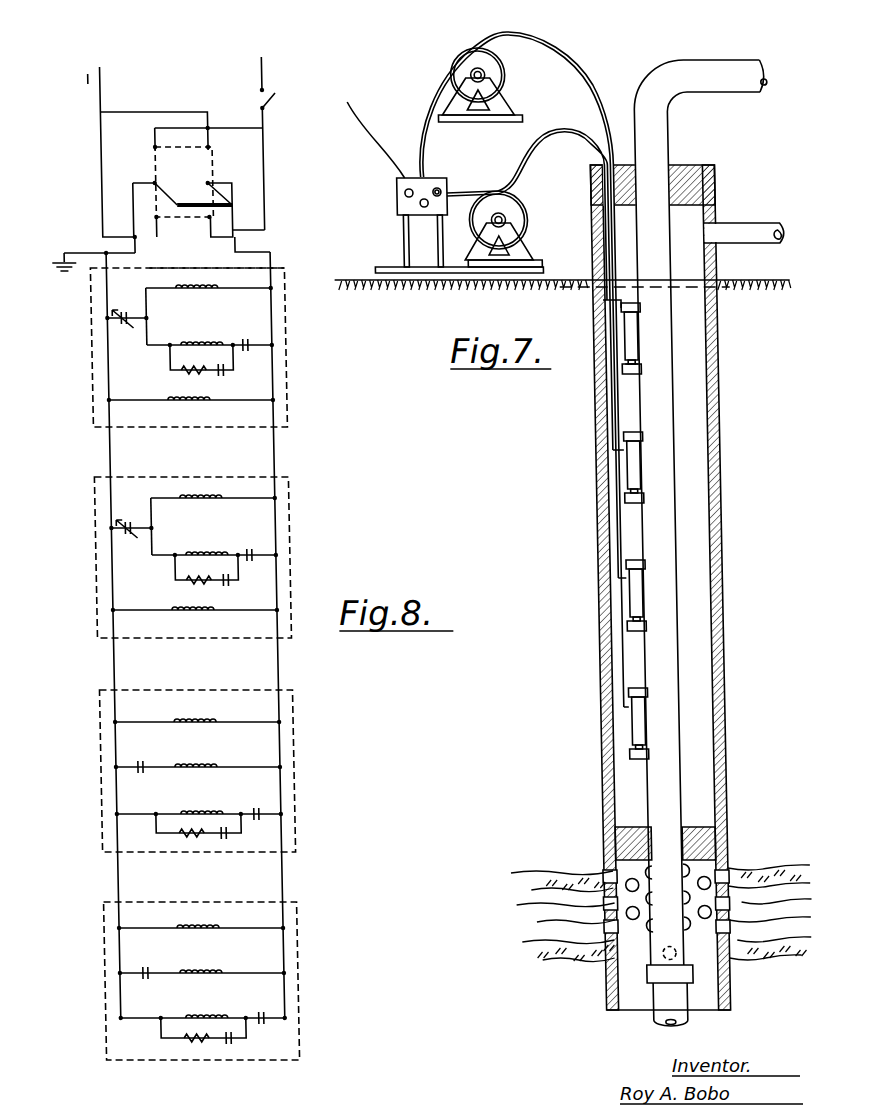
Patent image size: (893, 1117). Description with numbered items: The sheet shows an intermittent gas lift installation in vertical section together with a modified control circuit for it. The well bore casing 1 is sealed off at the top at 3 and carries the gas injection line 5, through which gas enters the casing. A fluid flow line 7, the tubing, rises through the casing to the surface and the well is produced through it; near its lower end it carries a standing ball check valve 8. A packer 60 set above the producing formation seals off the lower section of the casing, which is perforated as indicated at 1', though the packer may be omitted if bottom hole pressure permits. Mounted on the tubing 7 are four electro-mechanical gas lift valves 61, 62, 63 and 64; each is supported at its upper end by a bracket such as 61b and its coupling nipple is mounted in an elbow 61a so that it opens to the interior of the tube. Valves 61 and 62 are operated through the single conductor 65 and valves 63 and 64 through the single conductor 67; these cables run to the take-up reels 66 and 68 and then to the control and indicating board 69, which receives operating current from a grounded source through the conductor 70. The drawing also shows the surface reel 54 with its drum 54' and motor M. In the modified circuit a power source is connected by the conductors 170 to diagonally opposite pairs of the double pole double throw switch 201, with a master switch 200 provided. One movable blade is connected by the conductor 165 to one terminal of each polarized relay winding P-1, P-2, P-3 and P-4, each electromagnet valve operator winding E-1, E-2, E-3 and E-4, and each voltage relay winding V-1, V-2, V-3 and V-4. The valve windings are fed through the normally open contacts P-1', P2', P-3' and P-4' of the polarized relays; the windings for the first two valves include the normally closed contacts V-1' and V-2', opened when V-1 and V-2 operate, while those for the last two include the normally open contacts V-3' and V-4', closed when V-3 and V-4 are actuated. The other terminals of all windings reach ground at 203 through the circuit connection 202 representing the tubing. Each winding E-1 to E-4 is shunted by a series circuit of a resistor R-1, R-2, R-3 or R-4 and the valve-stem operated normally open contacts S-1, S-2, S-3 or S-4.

In FIG. 7, the well bore casing 1 is at (678, 587).
In FIG. 7, the casing perforations 1' is at (719, 880).
In FIG. 7, the casing top seal 3 is at (709, 188).
In FIG. 7, the gas injection line 5 is at (759, 244).
In FIG. 7, the fluid flow line 7 is at (661, 488).
In FIG. 7, the standing ball check valve 8 is at (664, 953).
In FIG. 7, the cable reel 54 is at (458, 215).
In FIG. 7, the cable reel drum 54' is at (382, 206).
In FIG. 7, the packer 60 is at (703, 838).
In FIG. 8, the electro-mechanical gas lift valve 61 is at (286, 356).
In FIG. 7, the electro-mechanical gas lift valve 61 is at (624, 348).
In FIG. 7, the elbow 61a is at (631, 375).
In FIG. 7, the bracket 61b is at (603, 300).
In FIG. 8, the electro-mechanical gas lift valve 62 is at (286, 506).
In FIG. 7, the electro-mechanical gas lift valve 62 is at (632, 476).
In FIG. 8, the electro-mechanical gas lift valve 63 is at (286, 731).
In FIG. 7, the electro-mechanical gas lift valve 63 is at (628, 596).
In FIG. 8, the electro-mechanical gas lift valve 64 is at (286, 933).
In FIG. 7, the electro-mechanical gas lift valve 64 is at (630, 727).
In FIG. 7, the single conductor 65 is at (591, 59).
In FIG. 7, the take-up reel 66 is at (508, 79).
In FIG. 7, the single conductor 67 is at (566, 130).
In FIG. 7, the take-up reel 68 is at (517, 209).
In FIG. 7, the control and indicating board 69 is at (436, 189).
In FIG. 7, the conductor 70 is at (373, 120).
In FIG. 7, the motor M is at (425, 209).
In FIG. 8, the conductor 165 is at (270, 268).
In FIG. 8, the conductors 170 is at (104, 74).
In FIG. 8, the master switch 200 is at (272, 110).
In FIG. 8, the double pole double throw switch 201 is at (216, 160).
In FIG. 8, the circuit connection 202 is at (100, 461).
In FIG. 8, the ground 203 is at (61, 276).
In FIG. 8, the polarized relay winding P-1 is at (210, 298).
In FIG. 8, the electromagnet valve operator winding E-1 is at (210, 333).
In FIG. 8, the resistor R-1 is at (202, 369).
In FIG. 8, the voltage relay winding V-1 is at (191, 409).
In FIG. 8, the normally closed contacts V-1' is at (127, 325).
In FIG. 8, the normally open contacts P-1' is at (290, 330).
In FIG. 8, the normally open contacts S-1 is at (225, 371).
In FIG. 8, the polarized relay winding P-2 is at (214, 508).
In FIG. 8, the electromagnet valve operator winding E-2 is at (214, 543).
In FIG. 8, the resistor R-2 is at (207, 579).
In FIG. 8, the voltage relay winding V-2 is at (195, 619).
In FIG. 8, the normally closed contacts V-2' is at (131, 536).
In FIG. 8, the normally open contacts P2' is at (302, 544).
In FIG. 8, the normally open contacts S-2 is at (226, 582).
In FIG. 8, the voltage relay winding V-3 is at (197, 731).
In FIG. 8, the polarized relay winding P-3 is at (197, 756).
In FIG. 8, the normally open contacts V-3' is at (143, 777).
In FIG. 8, the electromagnet valve operator winding E-3 is at (198, 802).
In FIG. 8, the resistor R-3 is at (199, 835).
In FIG. 8, the normally open contacts P-3' is at (311, 800).
In FIG. 8, the normally open contacts S-3 is at (220, 837).
In FIG. 8, the voltage relay winding V-4 is at (201, 938).
In FIG. 8, the polarized relay winding P-4 is at (201, 961).
In FIG. 8, the normally open contacts V-4' is at (147, 984).
In FIG. 8, the electromagnet valve operator winding E-4 is at (202, 1006).
In FIG. 8, the resistor R-4 is at (204, 1039).
In FIG. 8, the normally open contacts P-4' is at (314, 1003).
In FIG. 8, the normally open contacts S-4 is at (217, 1044).